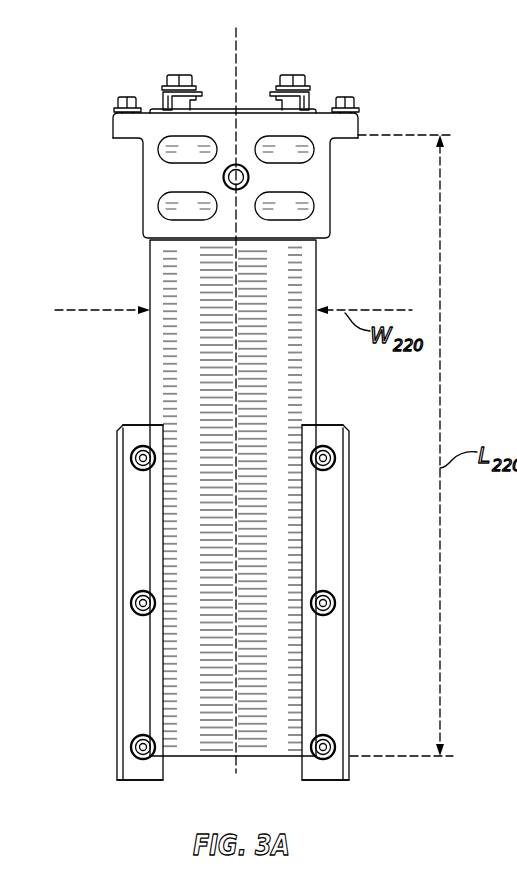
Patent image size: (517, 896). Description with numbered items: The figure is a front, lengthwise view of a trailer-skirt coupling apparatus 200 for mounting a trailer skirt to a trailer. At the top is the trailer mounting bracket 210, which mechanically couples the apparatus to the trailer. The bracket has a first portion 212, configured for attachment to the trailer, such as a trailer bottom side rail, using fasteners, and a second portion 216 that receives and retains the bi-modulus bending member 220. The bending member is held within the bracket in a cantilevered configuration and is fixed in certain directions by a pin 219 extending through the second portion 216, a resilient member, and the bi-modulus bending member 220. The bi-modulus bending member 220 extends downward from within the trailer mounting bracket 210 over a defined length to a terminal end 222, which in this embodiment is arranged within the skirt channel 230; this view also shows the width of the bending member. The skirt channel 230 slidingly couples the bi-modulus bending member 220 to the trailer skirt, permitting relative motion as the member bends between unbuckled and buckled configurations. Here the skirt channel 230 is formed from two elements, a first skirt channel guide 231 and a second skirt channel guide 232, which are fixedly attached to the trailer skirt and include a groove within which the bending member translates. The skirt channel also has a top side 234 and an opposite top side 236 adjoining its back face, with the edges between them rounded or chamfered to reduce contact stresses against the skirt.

The trailer-skirt coupling apparatus 200 is at (128, 50).
The trailer mounting bracket 210 is at (143, 192).
The first portion 212 is at (219, 122).
The second portion 216 is at (330, 215).
The pin 219 is at (249, 177).
The bi-modulus bending member 220 is at (150, 345).
The terminal end 222 is at (272, 757).
The skirt channel 230 is at (116, 697).
The first skirt channel guide 231 is at (117, 568).
The second skirt channel guide 232 is at (350, 565).
The top side 234 is at (136, 424).
The top side 236 is at (136, 780).